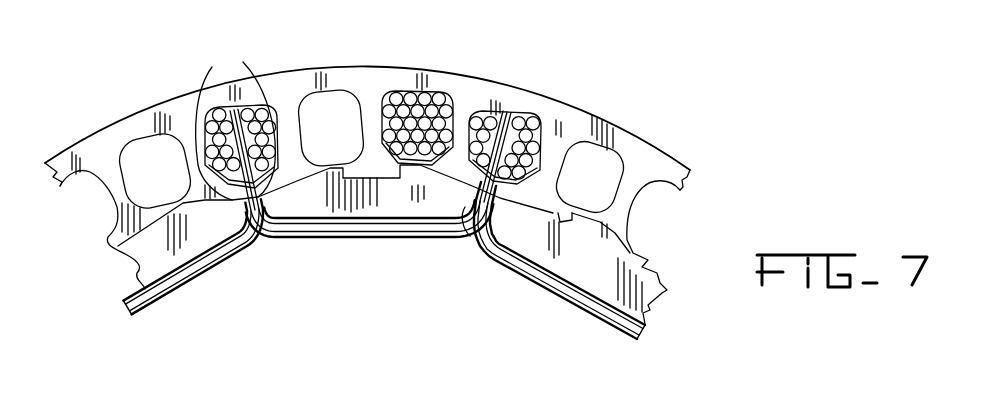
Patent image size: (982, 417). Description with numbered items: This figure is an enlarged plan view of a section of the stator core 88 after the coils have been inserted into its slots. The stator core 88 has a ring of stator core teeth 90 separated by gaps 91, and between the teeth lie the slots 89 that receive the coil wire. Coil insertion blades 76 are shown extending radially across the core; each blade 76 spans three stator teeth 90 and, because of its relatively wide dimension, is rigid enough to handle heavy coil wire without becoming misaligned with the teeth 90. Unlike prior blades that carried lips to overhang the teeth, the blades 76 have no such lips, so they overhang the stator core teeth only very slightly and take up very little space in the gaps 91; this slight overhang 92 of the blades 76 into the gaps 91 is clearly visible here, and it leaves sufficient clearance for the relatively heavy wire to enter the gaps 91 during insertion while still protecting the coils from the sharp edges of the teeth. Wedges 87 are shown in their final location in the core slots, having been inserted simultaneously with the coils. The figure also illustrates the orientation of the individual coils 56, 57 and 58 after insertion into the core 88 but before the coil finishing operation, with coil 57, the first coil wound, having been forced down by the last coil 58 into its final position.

The stator core 88 is at (333, 77).
The wedges 87 is at (476, 200).
The slots 89 is at (568, 133).
The gaps 91 is at (567, 213).
The stator core teeth 90 is at (368, 165).
The overhang 92 is at (488, 270).
The blades 76 is at (247, 240).
The coil 58 is at (182, 277).
The coil 57 is at (383, 233).
The coil 56 is at (568, 287).